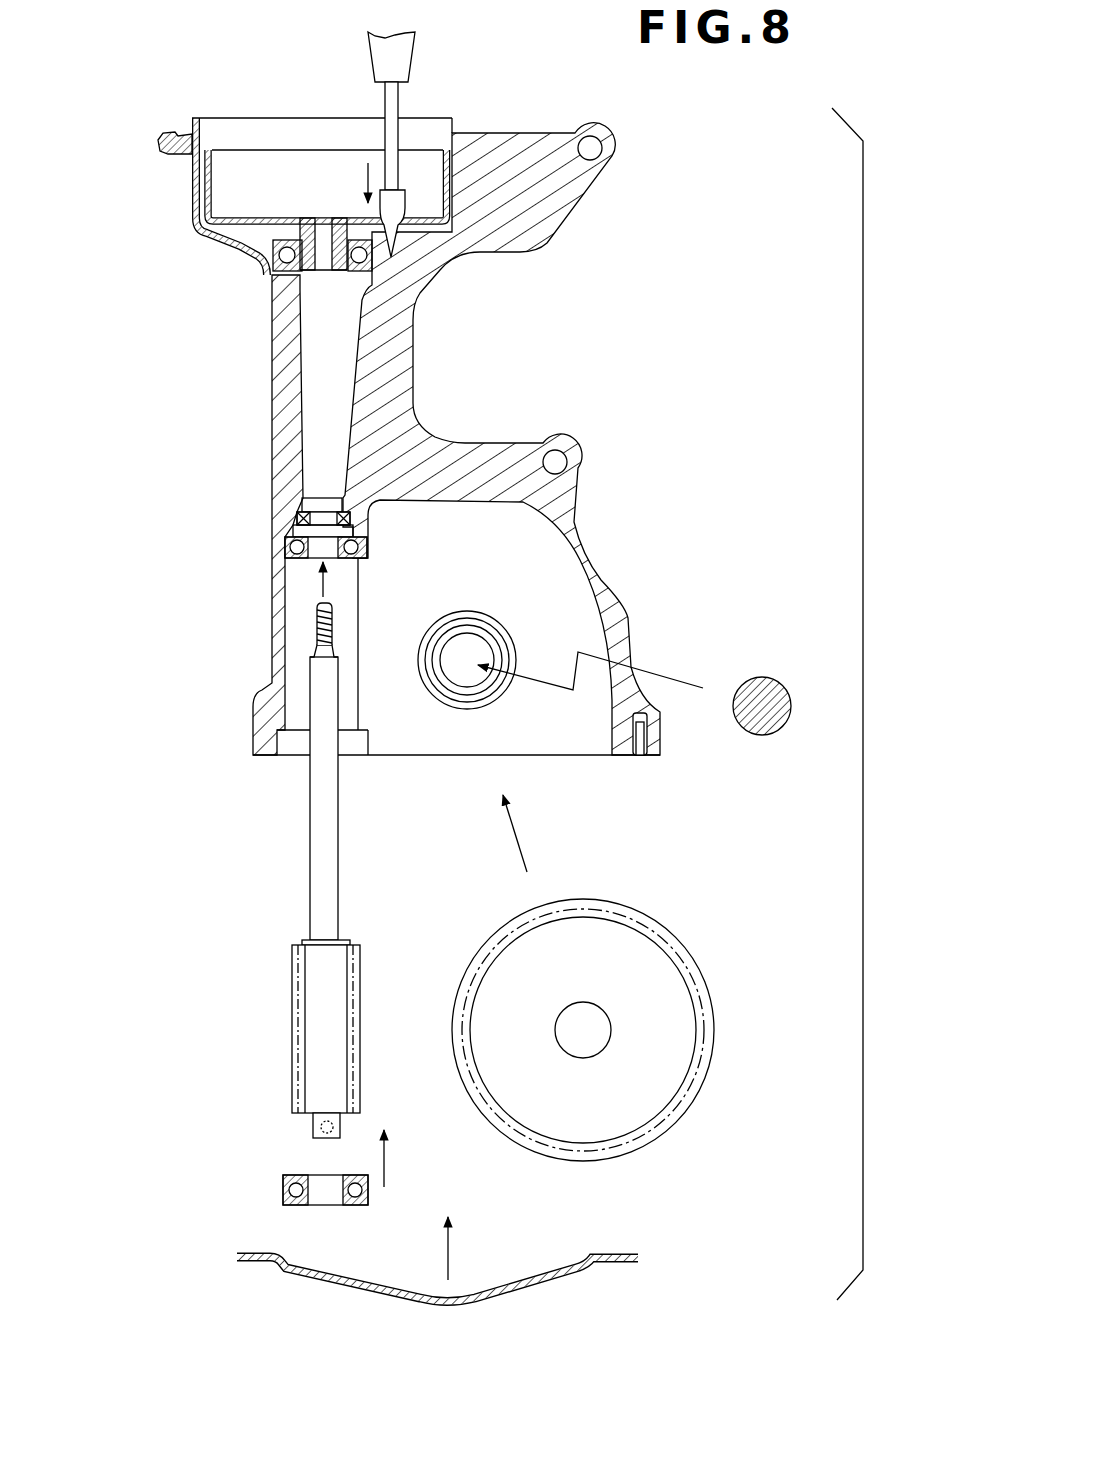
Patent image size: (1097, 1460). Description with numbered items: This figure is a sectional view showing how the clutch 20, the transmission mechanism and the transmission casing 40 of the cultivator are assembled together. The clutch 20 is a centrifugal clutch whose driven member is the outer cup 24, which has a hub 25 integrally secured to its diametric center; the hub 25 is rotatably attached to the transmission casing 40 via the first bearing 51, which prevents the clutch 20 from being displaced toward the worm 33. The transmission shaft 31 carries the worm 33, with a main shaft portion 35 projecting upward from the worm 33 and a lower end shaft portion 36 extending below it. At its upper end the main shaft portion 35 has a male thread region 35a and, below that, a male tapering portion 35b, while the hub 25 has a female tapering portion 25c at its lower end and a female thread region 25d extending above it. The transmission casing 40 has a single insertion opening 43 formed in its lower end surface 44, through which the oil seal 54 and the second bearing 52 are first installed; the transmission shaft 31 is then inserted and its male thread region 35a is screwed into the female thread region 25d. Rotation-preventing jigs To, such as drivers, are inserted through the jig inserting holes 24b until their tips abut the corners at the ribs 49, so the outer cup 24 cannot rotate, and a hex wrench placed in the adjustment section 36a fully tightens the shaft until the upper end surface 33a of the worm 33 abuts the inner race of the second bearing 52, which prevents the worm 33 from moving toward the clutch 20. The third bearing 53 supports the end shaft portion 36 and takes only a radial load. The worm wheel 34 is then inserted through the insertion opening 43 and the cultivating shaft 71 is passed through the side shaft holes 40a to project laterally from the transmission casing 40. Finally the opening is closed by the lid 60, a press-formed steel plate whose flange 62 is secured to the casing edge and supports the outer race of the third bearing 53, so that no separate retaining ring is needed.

The clutch 20 is at (303, 120).
The outer cup 24 is at (338, 163).
The jig inserting holes 24b is at (412, 205).
The hub 25 is at (270, 238).
The female tapering portion 25c is at (273, 313).
The female thread region 25d is at (317, 217).
The first bearing 51 is at (282, 260).
The transmission casing 40 is at (605, 160).
The side shaft holes 40a is at (468, 643).
The ribs 49 is at (413, 238).
The oil seal 54 is at (298, 517).
The second bearing 52 is at (285, 547).
The main shaft portion 35 is at (318, 880).
The male thread region 35a is at (320, 623).
The male tapering portion 35b is at (322, 653).
The transmission shaft 31 is at (300, 843).
The worm 33 is at (300, 1013).
The upper end surface 33a is at (310, 942).
The end shaft portion 36 is at (308, 1123).
The adjustment section 36a is at (318, 1137).
The third bearing 53 is at (283, 1188).
The worm wheel 34 is at (683, 1017).
The insertion opening 43 is at (418, 747).
The lower end surface 44 is at (620, 760).
The cultivating shaft 71 is at (760, 683).
The lid 60 is at (545, 1268).
The flange 62 is at (253, 1255).
The rotation-preventing jigs To is at (400, 50).